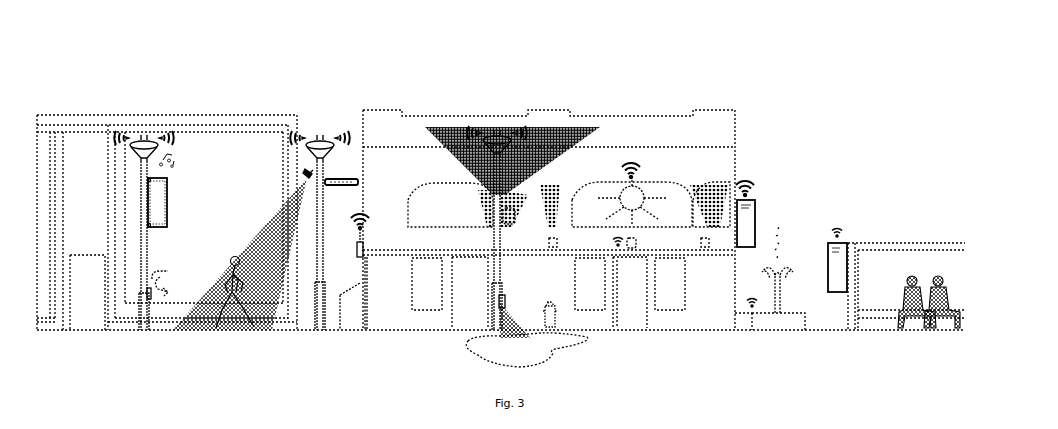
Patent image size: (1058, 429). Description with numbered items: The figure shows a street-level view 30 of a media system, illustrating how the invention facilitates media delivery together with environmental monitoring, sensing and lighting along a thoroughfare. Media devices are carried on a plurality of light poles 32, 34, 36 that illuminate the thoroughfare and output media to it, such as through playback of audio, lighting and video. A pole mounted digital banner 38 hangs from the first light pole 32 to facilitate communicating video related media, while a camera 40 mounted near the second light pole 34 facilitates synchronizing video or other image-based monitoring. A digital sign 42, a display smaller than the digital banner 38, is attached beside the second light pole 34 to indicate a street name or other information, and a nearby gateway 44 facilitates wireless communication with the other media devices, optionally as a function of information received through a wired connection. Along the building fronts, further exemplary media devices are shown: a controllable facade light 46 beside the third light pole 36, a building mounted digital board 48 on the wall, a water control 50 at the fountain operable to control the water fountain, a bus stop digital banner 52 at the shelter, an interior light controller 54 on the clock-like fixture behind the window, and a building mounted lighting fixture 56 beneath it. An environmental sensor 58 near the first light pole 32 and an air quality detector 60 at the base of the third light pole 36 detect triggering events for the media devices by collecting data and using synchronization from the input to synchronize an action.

The street-level view 30 is at (834, 52).
The light pole 32 is at (140, 177).
The light pole 34 is at (327, 166).
The light pole 36 is at (503, 168).
The pole mounted digital banner 38 is at (168, 197).
The camera 40 is at (304, 172).
The digital sign 42 is at (360, 183).
The gateway 44 is at (355, 249).
The controllable facade light 46 is at (515, 216).
The building mounted digital board 48 is at (757, 199).
The water control 50 is at (754, 296).
The bus stop digital banner 52 is at (846, 232).
The interior light controller 54 is at (640, 173).
The building mounted lighting fixture 56 is at (640, 243).
The environmental sensor 58 is at (170, 297).
The air quality detector 60 is at (506, 301).